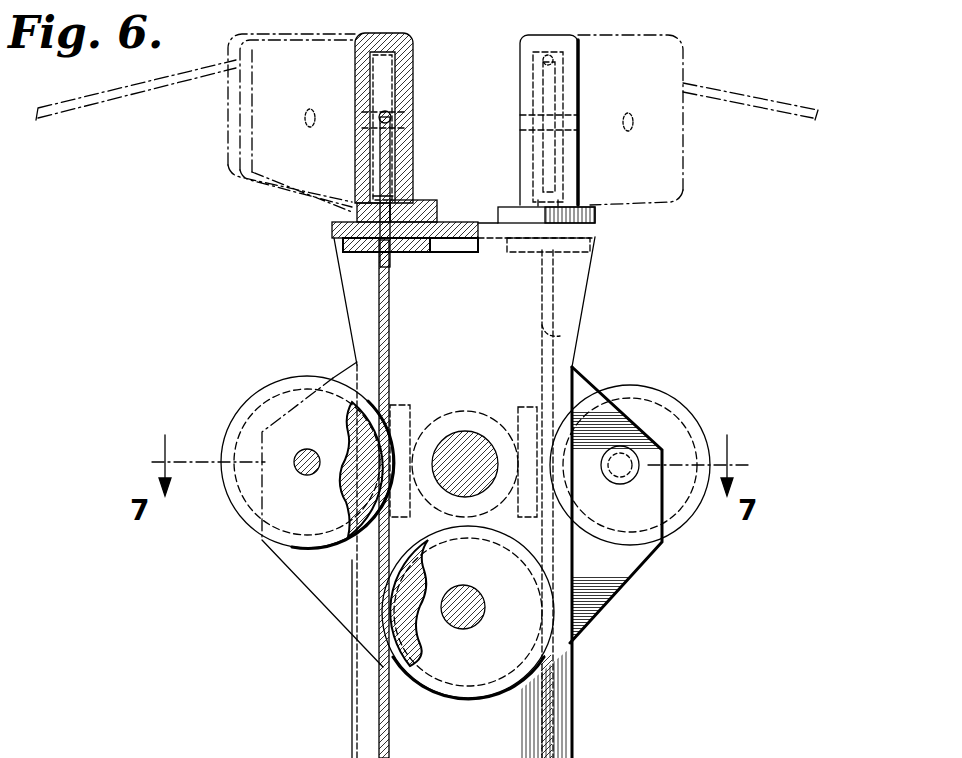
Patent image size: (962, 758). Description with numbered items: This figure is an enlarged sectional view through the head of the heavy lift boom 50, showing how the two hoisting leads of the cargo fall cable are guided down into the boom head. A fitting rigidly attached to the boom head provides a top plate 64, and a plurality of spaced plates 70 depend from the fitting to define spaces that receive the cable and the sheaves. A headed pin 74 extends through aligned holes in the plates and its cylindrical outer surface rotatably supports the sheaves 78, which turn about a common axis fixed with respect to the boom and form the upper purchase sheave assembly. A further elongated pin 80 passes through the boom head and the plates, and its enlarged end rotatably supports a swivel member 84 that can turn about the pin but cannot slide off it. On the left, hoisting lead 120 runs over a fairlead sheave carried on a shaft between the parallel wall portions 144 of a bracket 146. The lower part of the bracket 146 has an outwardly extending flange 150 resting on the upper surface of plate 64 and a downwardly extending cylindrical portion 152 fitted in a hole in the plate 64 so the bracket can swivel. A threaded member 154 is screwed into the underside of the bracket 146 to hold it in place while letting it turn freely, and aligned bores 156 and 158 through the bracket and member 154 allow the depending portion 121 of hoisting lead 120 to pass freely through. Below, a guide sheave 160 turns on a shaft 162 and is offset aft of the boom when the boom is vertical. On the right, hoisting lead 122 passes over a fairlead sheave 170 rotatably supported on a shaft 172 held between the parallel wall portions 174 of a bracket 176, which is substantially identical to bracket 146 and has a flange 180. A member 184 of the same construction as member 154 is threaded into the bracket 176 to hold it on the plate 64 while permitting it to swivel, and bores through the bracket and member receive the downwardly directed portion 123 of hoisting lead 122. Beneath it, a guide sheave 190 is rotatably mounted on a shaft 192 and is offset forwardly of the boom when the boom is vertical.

The heavy lift boom 50 is at (588, 752).
The top plate 64 is at (336, 231).
The spaced plates 70 is at (618, 583).
The headed pin 74 is at (482, 605).
The sheaves 78 is at (396, 625).
The elongated pin 80 is at (467, 440).
The swivel member 84 is at (476, 398).
The hoisting lead 120 is at (72, 110).
The depending portion of hoisting lead 121 is at (390, 330).
The hoisting lead 122 is at (748, 106).
The downwardly directed portion of hoisting lead 123 is at (562, 335).
The wall portions 144 is at (363, 96).
The bracket 146 is at (420, 38).
The flange 150 is at (438, 205).
The cylindrical portion 152 is at (442, 242).
The member 154 is at (345, 253).
The bore 156 is at (395, 202).
The bore 158 is at (390, 260).
The guide sheave 160 is at (264, 382).
The shaft 162 is at (298, 474).
The fairlead sheave 170 is at (568, 188).
The shaft 172 is at (563, 115).
The wall portions 174 is at (527, 82).
The bracket 176 is at (583, 81).
The flange 180 is at (597, 213).
The member 184 is at (600, 242).
The guide sheave 190 is at (650, 392).
The shaft 192 is at (624, 486).